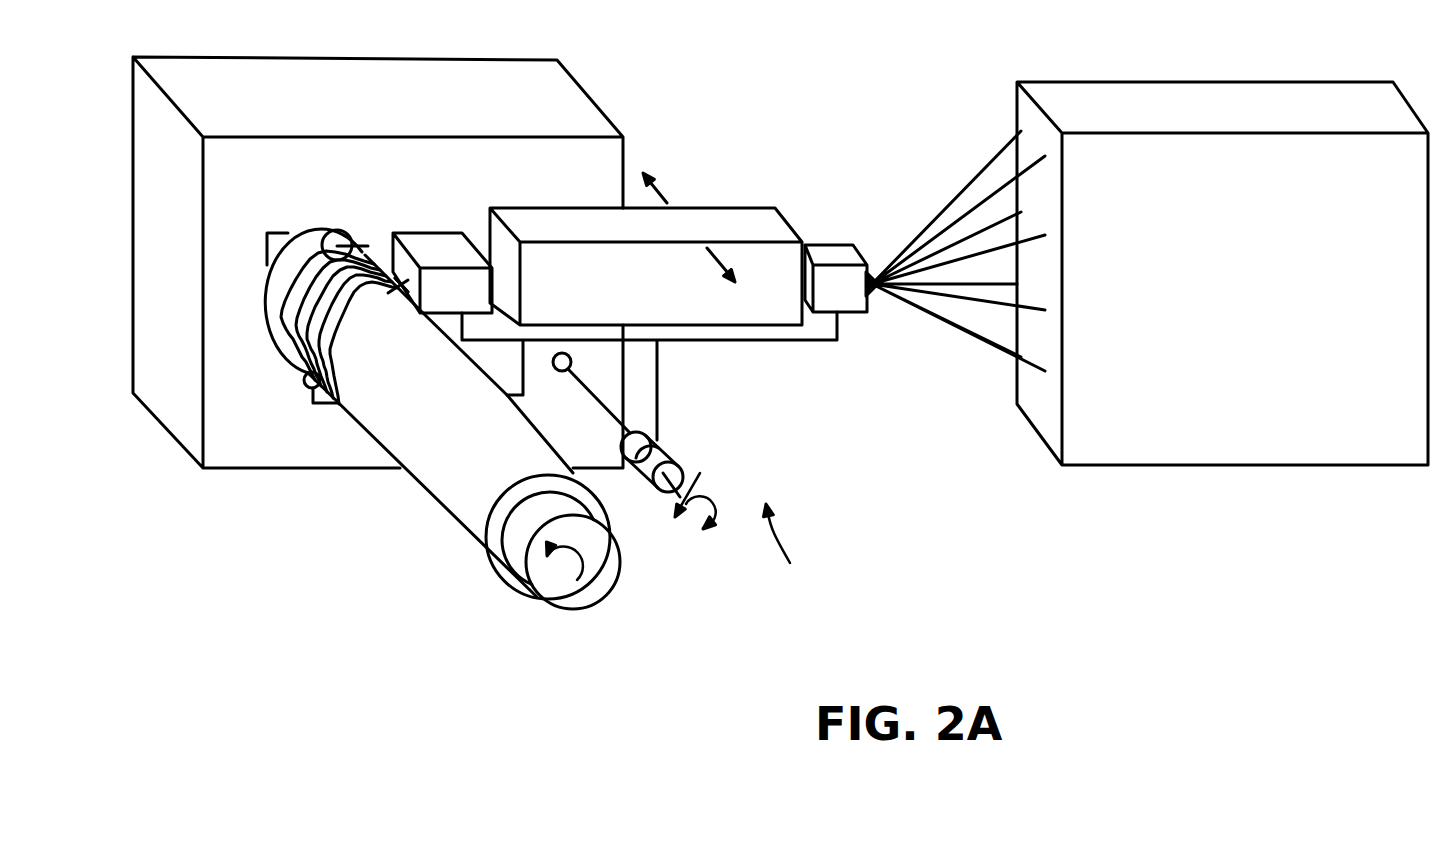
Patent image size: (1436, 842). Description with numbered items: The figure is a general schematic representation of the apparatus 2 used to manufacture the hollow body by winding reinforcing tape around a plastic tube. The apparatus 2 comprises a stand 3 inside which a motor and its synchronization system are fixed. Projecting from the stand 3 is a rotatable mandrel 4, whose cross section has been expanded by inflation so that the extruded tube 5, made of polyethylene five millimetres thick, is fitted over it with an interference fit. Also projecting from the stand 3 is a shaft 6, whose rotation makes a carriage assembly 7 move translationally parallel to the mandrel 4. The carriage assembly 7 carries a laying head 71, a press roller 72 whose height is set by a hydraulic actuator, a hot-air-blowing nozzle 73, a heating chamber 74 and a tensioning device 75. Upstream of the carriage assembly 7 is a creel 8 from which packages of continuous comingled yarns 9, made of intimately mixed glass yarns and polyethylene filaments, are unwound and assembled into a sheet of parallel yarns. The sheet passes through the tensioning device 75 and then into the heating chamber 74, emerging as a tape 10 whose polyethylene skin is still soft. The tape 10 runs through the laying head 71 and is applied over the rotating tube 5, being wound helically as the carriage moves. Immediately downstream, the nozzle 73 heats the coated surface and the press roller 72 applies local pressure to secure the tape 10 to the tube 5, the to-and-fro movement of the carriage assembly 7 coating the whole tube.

The apparatus 2 is at (789, 551).
The stand 3 is at (467, 90).
The mandrel 4 is at (552, 582).
The extruded tube 5 is at (462, 487).
The shaft 6 is at (636, 441).
The carriage assembly 7 is at (658, 348).
The creel 8 is at (1277, 395).
The comingled yarns 9 is at (956, 237).
The tape 10 is at (366, 302).
The laying head 71 is at (442, 253).
The press roller 72 is at (350, 257).
The hot-air-blowing nozzle 73 is at (304, 383).
The heating chamber 74 is at (717, 220).
The tensioning device 75 is at (833, 250).